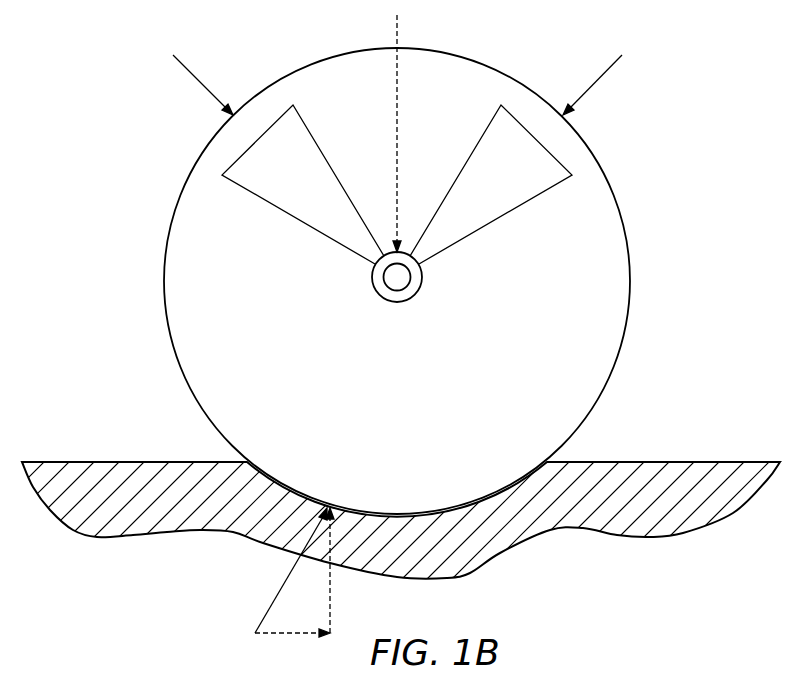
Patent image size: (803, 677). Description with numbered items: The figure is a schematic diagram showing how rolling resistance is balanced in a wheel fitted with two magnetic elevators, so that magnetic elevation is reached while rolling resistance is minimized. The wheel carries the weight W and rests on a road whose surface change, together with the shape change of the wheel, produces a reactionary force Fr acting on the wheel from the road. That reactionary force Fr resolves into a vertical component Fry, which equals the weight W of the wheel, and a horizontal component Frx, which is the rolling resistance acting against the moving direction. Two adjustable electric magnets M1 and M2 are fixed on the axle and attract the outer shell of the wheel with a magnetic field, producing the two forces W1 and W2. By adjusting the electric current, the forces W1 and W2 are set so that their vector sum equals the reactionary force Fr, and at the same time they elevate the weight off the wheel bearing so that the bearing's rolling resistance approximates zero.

The weight of the wheel W is at (408, 133).
The first magnetic force W1 is at (204, 85).
The second magnetic force W2 is at (595, 86).
The first adjustable electric magnet M1 is at (303, 184).
The second adjustable electric magnet M2 is at (491, 184).
The reactionary force Fr is at (289, 570).
The horizontal component of the reactionary force Frx is at (292, 649).
The vertical component of the reactionary force Fry is at (345, 570).